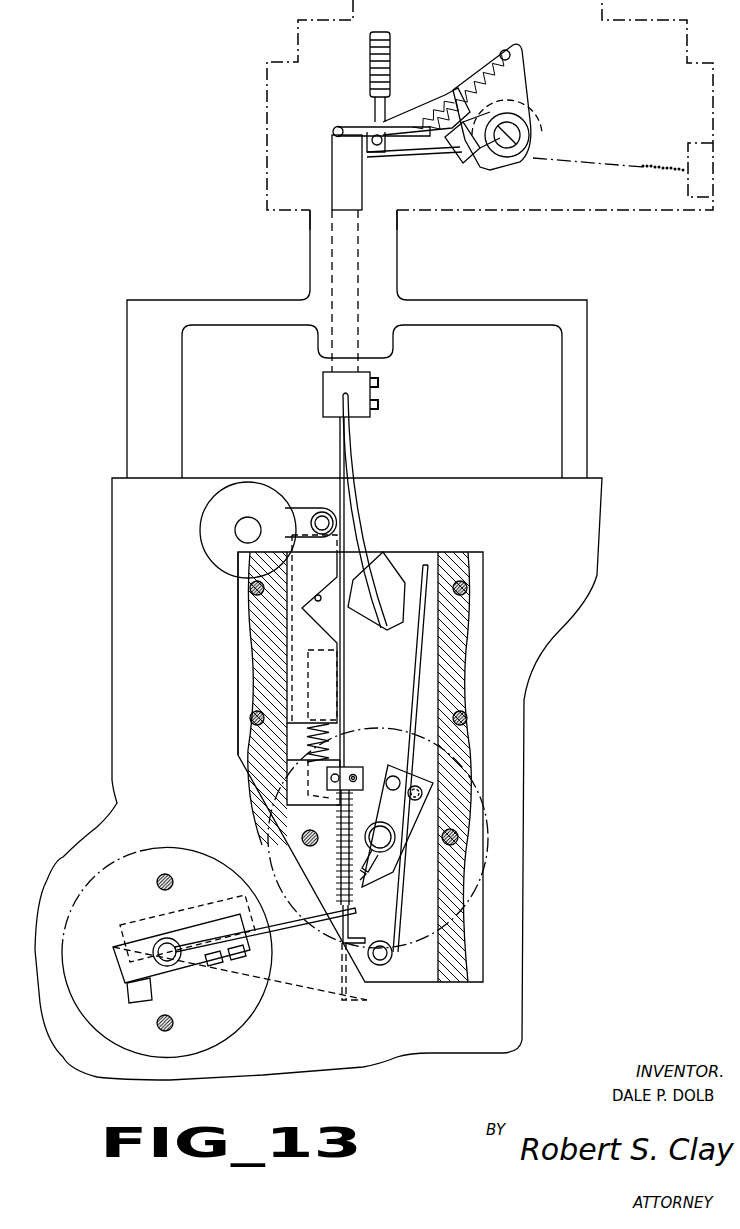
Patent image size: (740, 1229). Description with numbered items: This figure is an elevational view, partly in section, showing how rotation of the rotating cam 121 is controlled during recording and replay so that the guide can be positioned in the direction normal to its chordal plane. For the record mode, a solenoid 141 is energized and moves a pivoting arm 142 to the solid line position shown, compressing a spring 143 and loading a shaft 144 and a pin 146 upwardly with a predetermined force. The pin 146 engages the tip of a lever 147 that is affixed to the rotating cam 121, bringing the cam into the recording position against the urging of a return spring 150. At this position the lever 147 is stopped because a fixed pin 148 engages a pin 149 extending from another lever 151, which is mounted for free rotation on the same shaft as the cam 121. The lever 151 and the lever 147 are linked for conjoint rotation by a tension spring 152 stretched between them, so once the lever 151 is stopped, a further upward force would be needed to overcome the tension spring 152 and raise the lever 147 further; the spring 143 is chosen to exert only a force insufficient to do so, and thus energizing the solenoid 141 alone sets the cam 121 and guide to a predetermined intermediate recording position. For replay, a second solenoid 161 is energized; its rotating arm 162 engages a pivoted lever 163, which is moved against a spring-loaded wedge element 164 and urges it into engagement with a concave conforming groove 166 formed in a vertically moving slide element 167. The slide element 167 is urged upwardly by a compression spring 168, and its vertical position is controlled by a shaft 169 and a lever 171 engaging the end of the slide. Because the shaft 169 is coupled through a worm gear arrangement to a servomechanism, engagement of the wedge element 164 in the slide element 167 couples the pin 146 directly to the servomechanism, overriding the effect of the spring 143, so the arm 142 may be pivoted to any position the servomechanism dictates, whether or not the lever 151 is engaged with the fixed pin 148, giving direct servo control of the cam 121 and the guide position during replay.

The rotating cam 121 is at (524, 148).
The solenoid 141 is at (145, 850).
The pivoting arm 142 is at (293, 926).
The spring 143 is at (340, 812).
The shaft 144 is at (346, 690).
The pin 146 is at (333, 182).
The lever 147 is at (343, 126).
The fixed pin 148 is at (389, 56).
The pin 149 is at (379, 147).
The return spring 150 is at (650, 163).
The lever 151 is at (402, 120).
The tension spring 152 is at (485, 75).
The second solenoid 161 is at (414, 945).
The rotating arm 162 is at (380, 780).
The pivoted lever 163 is at (412, 713).
The wedge element 164 is at (373, 622).
The concave conforming groove 166 is at (317, 594).
The slide element 167 is at (296, 636).
The compression spring 168 is at (306, 740).
The shaft 169 is at (236, 529).
The lever 171 is at (309, 516).